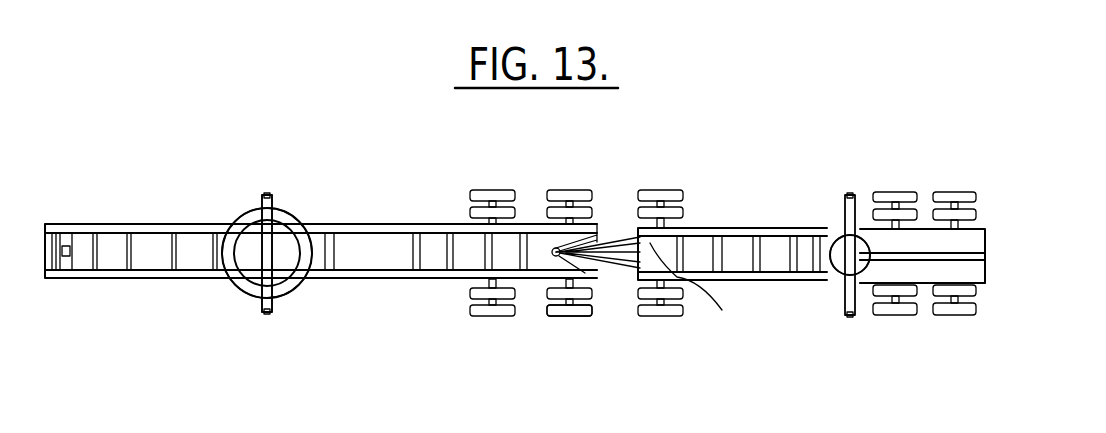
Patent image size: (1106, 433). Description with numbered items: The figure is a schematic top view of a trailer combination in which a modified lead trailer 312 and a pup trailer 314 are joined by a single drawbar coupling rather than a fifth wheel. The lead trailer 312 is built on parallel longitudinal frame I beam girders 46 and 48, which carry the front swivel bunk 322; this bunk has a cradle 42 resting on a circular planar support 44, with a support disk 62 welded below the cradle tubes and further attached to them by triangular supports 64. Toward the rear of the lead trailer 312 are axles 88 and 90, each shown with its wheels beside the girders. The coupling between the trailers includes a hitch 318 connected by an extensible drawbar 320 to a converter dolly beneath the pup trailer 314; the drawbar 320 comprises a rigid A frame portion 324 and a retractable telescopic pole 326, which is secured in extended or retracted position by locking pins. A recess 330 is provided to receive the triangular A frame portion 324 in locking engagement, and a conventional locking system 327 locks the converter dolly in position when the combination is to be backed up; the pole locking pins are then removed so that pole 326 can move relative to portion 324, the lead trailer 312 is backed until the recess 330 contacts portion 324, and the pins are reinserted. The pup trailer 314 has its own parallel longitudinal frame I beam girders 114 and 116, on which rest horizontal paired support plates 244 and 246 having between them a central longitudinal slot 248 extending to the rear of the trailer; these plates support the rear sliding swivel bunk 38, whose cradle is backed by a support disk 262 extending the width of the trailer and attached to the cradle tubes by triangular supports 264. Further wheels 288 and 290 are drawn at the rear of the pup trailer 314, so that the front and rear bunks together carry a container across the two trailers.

The support 44 is at (233, 225).
The support disk 62 is at (253, 225).
The swivel bunk 322 is at (289, 203).
The modified lead trailer 312 is at (323, 225).
The longitudinal frame I beam girder 46 is at (427, 227).
The hitch 318 is at (552, 250).
The pole 326 is at (603, 235).
The rigid A frame portion 324 is at (620, 237).
The longitudinal frame I beam girder 114 is at (708, 223).
The pup trailer 314 is at (749, 222).
The triangular supports 264 is at (840, 230).
The sliding swivel bunk 38 is at (859, 207).
The support plate 244 is at (972, 240).
The central longitudinal slot 248 is at (985, 255).
The support plate 246 is at (968, 267).
The cradle 42 is at (253, 288).
The triangular supports 64 is at (285, 275).
The longitudinal frame I beam girder 48 is at (325, 275).
The axle 88 is at (482, 280).
The axle 90 is at (553, 283).
The recess 330 is at (582, 300).
The extensible drawbar 320 is at (622, 262).
The locking system 327 is at (702, 288).
The longitudinal frame I beam girder 116 is at (768, 283).
The support disk 262 is at (837, 268).
The wheel 288 is at (917, 287).
The wheel 290 is at (973, 285).